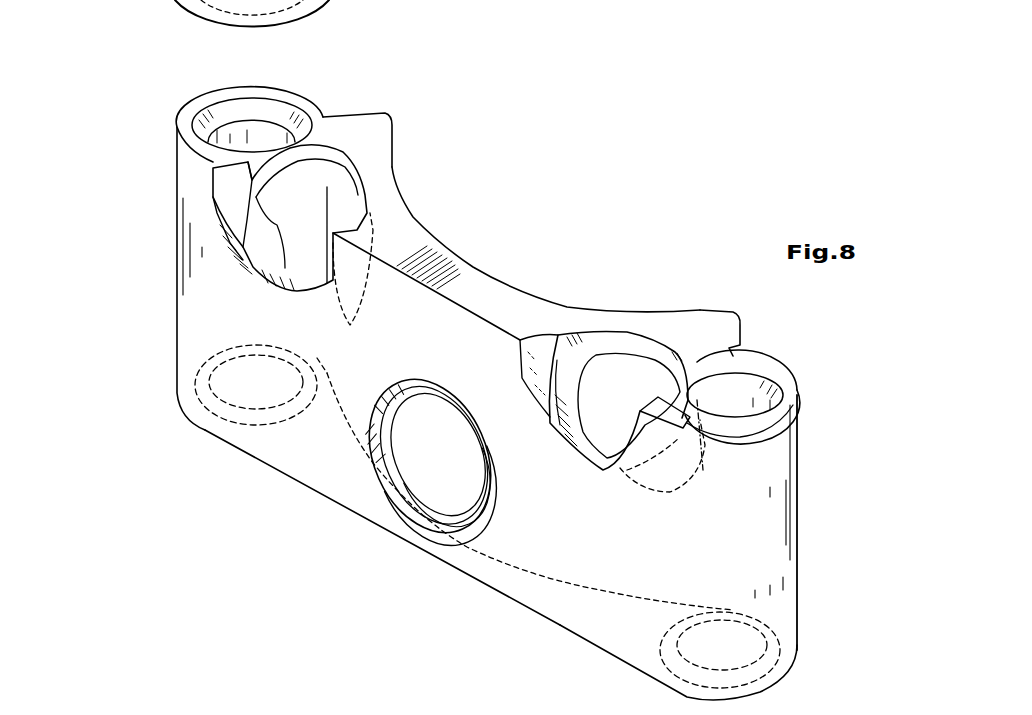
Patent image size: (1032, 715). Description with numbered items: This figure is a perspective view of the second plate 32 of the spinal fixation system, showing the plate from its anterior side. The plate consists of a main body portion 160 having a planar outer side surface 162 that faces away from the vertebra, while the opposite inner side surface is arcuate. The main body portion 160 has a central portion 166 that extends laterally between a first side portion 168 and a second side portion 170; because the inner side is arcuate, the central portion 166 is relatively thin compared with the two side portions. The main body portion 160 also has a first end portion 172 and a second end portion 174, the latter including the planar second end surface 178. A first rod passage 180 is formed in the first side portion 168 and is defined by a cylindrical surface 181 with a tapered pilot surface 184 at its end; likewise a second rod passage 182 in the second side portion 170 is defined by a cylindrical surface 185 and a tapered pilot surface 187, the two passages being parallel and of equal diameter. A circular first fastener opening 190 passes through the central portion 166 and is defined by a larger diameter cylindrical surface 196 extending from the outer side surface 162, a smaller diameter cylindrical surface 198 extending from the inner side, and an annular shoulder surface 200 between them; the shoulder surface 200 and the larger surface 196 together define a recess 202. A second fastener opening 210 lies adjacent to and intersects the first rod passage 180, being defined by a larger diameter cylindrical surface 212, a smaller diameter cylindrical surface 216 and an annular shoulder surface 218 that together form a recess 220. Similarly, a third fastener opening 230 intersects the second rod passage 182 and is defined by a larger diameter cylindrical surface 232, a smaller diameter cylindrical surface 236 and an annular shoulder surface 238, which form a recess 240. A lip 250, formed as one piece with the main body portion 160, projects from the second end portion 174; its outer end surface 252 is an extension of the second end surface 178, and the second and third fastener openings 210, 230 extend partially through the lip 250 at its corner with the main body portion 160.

The second plate 32 is at (175, 478).
The main body portion 160 is at (283, 468).
The planar outer side surface 162 is at (533, 540).
The central portion 166 is at (545, 610).
The first side portion 168 is at (163, 313).
The second side portion 170 is at (805, 542).
The first end portion 172 is at (215, 439).
The second end portion 174 is at (487, 248).
The second end surface 178 is at (500, 310).
The first rod passage 180 is at (247, 137).
The cylindrical surface 181 is at (267, 125).
The tapered pilot surface 184 is at (290, 113).
The second rod passage 182 is at (727, 397).
The cylindrical surface 185 is at (720, 390).
The tapered pilot surface 187 is at (708, 367).
The first fastener opening 190 is at (428, 380).
The larger diameter cylindrical surface 196 is at (413, 497).
The smaller diameter cylindrical surface 198 is at (435, 483).
The annular shoulder surface 200 is at (460, 513).
The recess 202 is at (373, 457).
The second fastener opening 210 is at (353, 167).
The larger diameter cylindrical surface 212 is at (230, 182).
The smaller diameter cylindrical surface 216 is at (280, 283).
The annular shoulder surface 218 is at (247, 242).
The recess 220 is at (247, 243).
The third fastener opening 230 is at (603, 478).
The larger diameter cylindrical surface 232 is at (525, 355).
The smaller diameter cylindrical surface 236 is at (607, 343).
The annular shoulder surface 238 is at (562, 330).
The recess 240 is at (533, 385).
The lip 250 is at (443, 241).
The outer end surface 252 is at (403, 227).